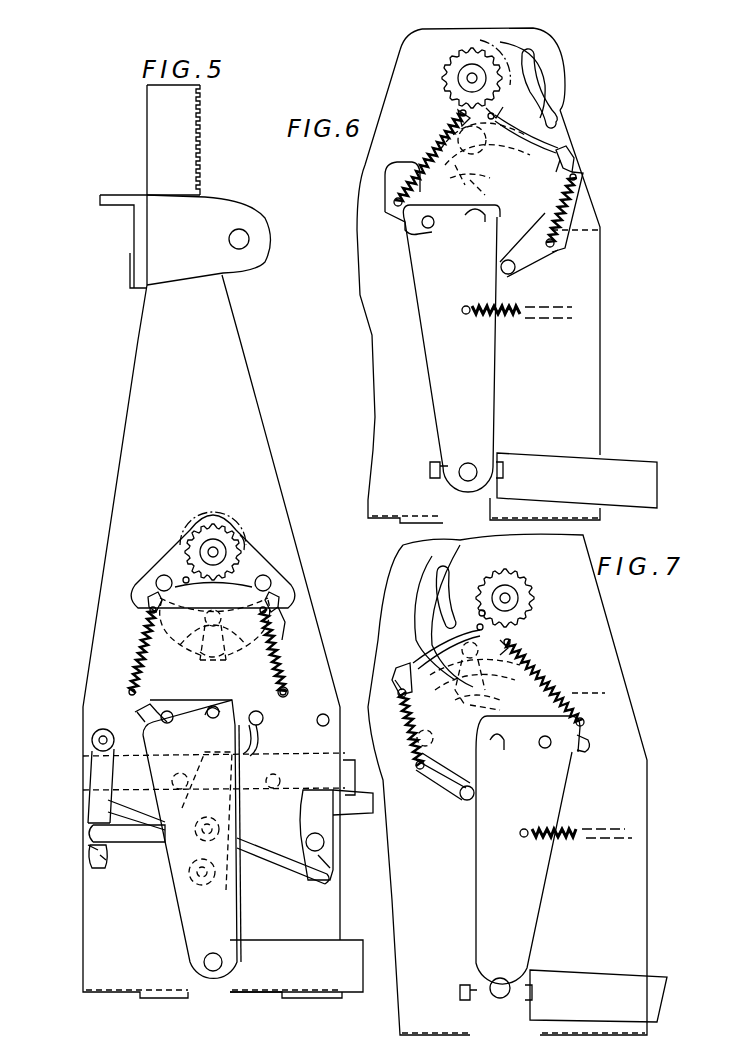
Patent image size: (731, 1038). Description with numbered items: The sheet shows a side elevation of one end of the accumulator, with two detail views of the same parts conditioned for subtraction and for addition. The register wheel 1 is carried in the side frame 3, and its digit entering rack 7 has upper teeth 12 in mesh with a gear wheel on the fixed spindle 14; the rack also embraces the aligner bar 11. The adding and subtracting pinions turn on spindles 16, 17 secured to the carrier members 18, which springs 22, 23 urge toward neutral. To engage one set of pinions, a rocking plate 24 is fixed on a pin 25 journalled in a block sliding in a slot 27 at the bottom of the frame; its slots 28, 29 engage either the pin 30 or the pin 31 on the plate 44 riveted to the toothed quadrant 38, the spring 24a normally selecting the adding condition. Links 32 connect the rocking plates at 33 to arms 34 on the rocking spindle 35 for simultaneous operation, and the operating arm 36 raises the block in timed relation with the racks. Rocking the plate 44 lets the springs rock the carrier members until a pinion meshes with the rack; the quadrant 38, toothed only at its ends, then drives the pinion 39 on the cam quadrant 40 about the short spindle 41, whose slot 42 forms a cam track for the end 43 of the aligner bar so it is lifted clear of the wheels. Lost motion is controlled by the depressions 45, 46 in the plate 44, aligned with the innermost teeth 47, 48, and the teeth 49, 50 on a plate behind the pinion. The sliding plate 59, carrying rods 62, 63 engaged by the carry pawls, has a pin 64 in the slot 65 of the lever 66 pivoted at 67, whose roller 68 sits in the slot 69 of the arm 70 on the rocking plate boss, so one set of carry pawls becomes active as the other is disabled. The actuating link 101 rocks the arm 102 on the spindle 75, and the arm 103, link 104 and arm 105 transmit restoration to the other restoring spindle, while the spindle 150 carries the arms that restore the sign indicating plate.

In FIG. 5, the denominational register wheel 1 is at (196, 660).
In FIG. 6, the denominational register wheel 1 is at (495, 195).
In FIG. 7, the denominational register wheel 1 is at (470, 712).
In FIG. 5, the side frame 3 is at (240, 336).
In FIG. 6, the side frame 3 is at (383, 172).
In FIG. 7, the side frame 3 is at (507, 784).
In FIG. 5, the digit entering rack 7 is at (175, 156).
In FIG. 5, the aligner bar 11 is at (196, 640).
In FIG. 6, the aligner bar 11 is at (485, 175).
In FIG. 7, the aligner bar 11 is at (475, 698).
In FIG. 5, the rack teeth 12 is at (207, 123).
In FIG. 5, the fixed spindle 14 is at (245, 239).
In FIG. 6, the spindle 16 is at (600, 230).
In FIG. 7, the spindle 16 is at (585, 695).
In FIG. 6, the spindle 17 is at (410, 180).
In FIG. 7, the spindle 17 is at (432, 738).
In FIG. 5, the carrier member 18 is at (290, 690).
In FIG. 6, the carrier member 18 is at (555, 250).
In FIG. 7, the carrier member 18 is at (435, 776).
In FIG. 5, the spring 22 is at (272, 665).
In FIG. 6, the spring 22 is at (576, 205).
In FIG. 7, the spring 22 is at (536, 668).
In FIG. 5, the spring 23 is at (150, 640).
In FIG. 6, the spring 23 is at (440, 148).
In FIG. 7, the spring 23 is at (413, 740).
In FIG. 5, the rocking plate 24 is at (200, 927).
In FIG. 6, the rocking plate 24 is at (482, 395).
In FIG. 7, the rocking plate 24 is at (494, 876).
In FIG. 6, the spring 24a is at (506, 316).
In FIG. 7, the spring 24a is at (575, 830).
In FIG. 5, the pin 25 is at (213, 972).
In FIG. 6, the pin 25 is at (468, 482).
In FIG. 7, the pin 25 is at (508, 984).
In FIG. 6, the slot 27 is at (446, 508).
In FIG. 7, the slot 27 is at (482, 1012).
In FIG. 5, the slot 28 is at (136, 713).
In FIG. 6, the slot 28 is at (410, 228).
In FIG. 7, the slot 28 is at (495, 746).
In FIG. 5, the slot 29 is at (200, 708).
In FIG. 6, the slot 29 is at (478, 222).
In FIG. 7, the slot 29 is at (582, 744).
In FIG. 5, the pin 30 is at (262, 722).
In FIG. 6, the pin 30 is at (510, 275).
In FIG. 7, the pin 30 is at (543, 749).
In FIG. 5, the pin 31 is at (172, 722).
In FIG. 6, the pin 31 is at (430, 228).
In FIG. 7, the pin 31 is at (475, 795).
In FIG. 5, the link 32 is at (160, 842).
In FIG. 5, the connection 33 is at (107, 854).
In FIG. 5, the arm 34 is at (104, 773).
In FIG. 5, the rocking spindle 35 is at (115, 740).
In FIG. 5, the operating arm 36 is at (345, 950).
In FIG. 6, the operating arm 36 is at (532, 462).
In FIG. 7, the operating arm 36 is at (610, 982).
In FIG. 5, the toothed quadrant 38 is at (284, 630).
In FIG. 6, the toothed quadrant 38 is at (580, 178).
In FIG. 7, the toothed quadrant 38 is at (410, 716).
In FIG. 5, the pinion 39 is at (230, 540).
In FIG. 6, the pinion 39 is at (452, 82).
In FIG. 7, the pinion 39 is at (522, 590).
In FIG. 5, the cam quadrant 40 is at (258, 555).
In FIG. 6, the cam quadrant 40 is at (548, 68).
In FIG. 7, the cam quadrant 40 is at (431, 568).
In FIG. 5, the short spindle 41 is at (214, 542).
In FIG. 6, the short spindle 41 is at (470, 76).
In FIG. 7, the short spindle 41 is at (512, 600).
In FIG. 5, the slot 42 is at (263, 585).
In FIG. 6, the slot 42 is at (532, 88).
In FIG. 7, the slot 42 is at (452, 580).
In FIG. 5, the end of aligner bar 43 is at (218, 652).
In FIG. 6, the end of aligner bar 43 is at (460, 120).
In FIG. 7, the end of aligner bar 43 is at (456, 678).
In FIG. 5, the plate 44 is at (248, 754).
In FIG. 6, the plate 44 is at (560, 140).
In FIG. 7, the plate 44 is at (462, 797).
In FIG. 5, the depression 45 is at (274, 614).
In FIG. 6, the depression 45 is at (556, 163).
In FIG. 7, the depression 45 is at (515, 643).
In FIG. 5, the depression 46 is at (150, 607).
In FIG. 6, the depression 46 is at (486, 145).
In FIG. 7, the depression 46 is at (450, 692).
In FIG. 6, the tooth 47 is at (576, 157).
In FIG. 7, the tooth 47 is at (470, 628).
In FIG. 6, the tooth 48 is at (500, 110).
In FIG. 7, the tooth 48 is at (408, 668).
In FIG. 5, the tooth 49 is at (236, 577).
In FIG. 6, the tooth 49 is at (493, 114).
In FIG. 7, the tooth 49 is at (478, 626).
In FIG. 5, the tooth 50 is at (185, 578).
In FIG. 7, the tooth 50 is at (480, 612).
In FIG. 5, the sliding plate 59 is at (349, 760).
In FIG. 5, the rod 62 is at (282, 779).
In FIG. 5, the rod 63 is at (176, 774).
In FIG. 5, the pin 64 is at (290, 758).
In FIG. 5, the slot 65 is at (190, 798).
In FIG. 5, the lever 66 is at (222, 815).
In FIG. 5, the pivot 67 is at (225, 834).
In FIG. 5, the roller 68 is at (225, 872).
In FIG. 5, the slot 69 is at (190, 874).
In FIG. 5, the arm 70 is at (241, 925).
In FIG. 5, the spindle 75 is at (322, 844).
In FIG. 5, the actuating link 101 is at (363, 815).
In FIG. 5, the arm 102 is at (305, 832).
In FIG. 5, the arm 103 is at (324, 862).
In FIG. 5, the link 104 is at (290, 866).
In FIG. 5, the arm 105 is at (98, 868).
In FIG. 5, the spindle 150 is at (318, 720).